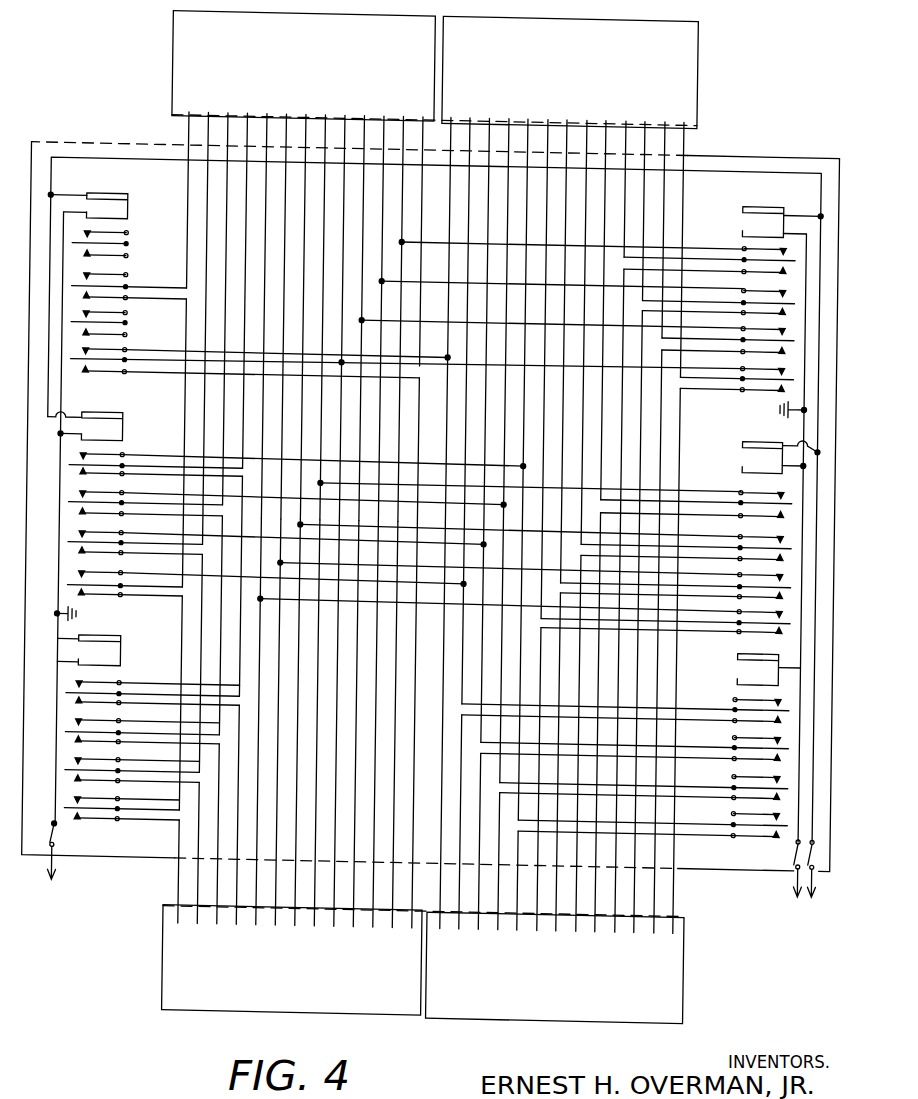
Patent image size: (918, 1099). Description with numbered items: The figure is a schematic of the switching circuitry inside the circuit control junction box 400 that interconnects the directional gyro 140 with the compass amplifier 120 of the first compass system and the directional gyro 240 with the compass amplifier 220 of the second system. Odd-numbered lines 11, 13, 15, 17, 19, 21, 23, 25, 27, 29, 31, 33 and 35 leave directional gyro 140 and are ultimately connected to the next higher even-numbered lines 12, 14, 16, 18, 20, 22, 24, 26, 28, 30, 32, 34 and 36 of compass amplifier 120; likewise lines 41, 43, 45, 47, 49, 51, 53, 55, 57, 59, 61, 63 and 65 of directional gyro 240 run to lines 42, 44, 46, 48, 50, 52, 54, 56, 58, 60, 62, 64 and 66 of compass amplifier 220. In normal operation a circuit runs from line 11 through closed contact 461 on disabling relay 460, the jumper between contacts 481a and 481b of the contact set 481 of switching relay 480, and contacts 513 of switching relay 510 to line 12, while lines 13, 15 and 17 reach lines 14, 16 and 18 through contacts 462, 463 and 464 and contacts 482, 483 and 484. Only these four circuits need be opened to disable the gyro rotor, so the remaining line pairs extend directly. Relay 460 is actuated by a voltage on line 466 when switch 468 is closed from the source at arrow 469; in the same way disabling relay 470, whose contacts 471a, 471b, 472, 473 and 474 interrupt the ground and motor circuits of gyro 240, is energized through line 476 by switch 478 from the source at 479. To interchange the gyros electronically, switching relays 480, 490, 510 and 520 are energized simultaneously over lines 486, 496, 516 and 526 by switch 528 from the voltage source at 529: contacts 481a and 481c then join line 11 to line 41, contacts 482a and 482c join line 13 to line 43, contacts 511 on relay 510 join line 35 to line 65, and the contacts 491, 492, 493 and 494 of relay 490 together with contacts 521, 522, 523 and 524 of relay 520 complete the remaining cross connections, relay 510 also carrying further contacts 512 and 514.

The compass amplifier 120 is at (316, 53).
The compass amplifier 220 is at (540, 55).
The directional gyro 140 is at (276, 985).
The directional gyro 240 is at (536, 987).
The circuit control junction box 400 is at (769, 135).
The line 12 is at (188, 193).
The line 14 is at (205, 321).
The line 16 is at (225, 302).
The line 18 is at (245, 283).
The line 20 is at (264, 308).
The line 22 is at (283, 309).
The line 24 is at (303, 309).
The line 26 is at (322, 310).
The line 28 is at (342, 310).
The line 30 is at (361, 311).
The line 32 is at (381, 311).
The line 34 is at (400, 311).
The line 36 is at (421, 234).
The line 66 is at (448, 312).
The line 42 is at (466, 404).
The line 44 is at (485, 423).
The line 46 is at (504, 444).
The line 48 is at (523, 462).
The line 50 is at (544, 361).
The line 52 is at (564, 344).
The line 54 is at (583, 325).
The line 56 is at (603, 303).
The line 58 is at (624, 182).
The line 60 is at (644, 203).
The line 62 is at (663, 223).
The line 64 is at (682, 242).
The line 11 is at (182, 621).
The line 13 is at (199, 748).
The line 15 is at (219, 730).
The line 17 is at (239, 710).
The line 19 is at (258, 731).
The line 21 is at (277, 732).
The line 23 is at (297, 732).
The line 25 is at (316, 733).
The line 27 is at (336, 733).
The line 29 is at (355, 734).
The line 31 is at (375, 734).
The line 33 is at (394, 734).
The line 35 is at (415, 663).
The line 65 is at (442, 735).
The line 41 is at (460, 832).
The line 43 is at (479, 851).
The line 45 is at (498, 871).
The line 47 is at (517, 890).
The line 49 is at (539, 788).
The line 51 is at (558, 772).
The line 53 is at (578, 753).
The line 55 is at (597, 732).
The line 57 is at (619, 610).
The line 59 is at (638, 631).
The line 61 is at (658, 651).
The line 63 is at (676, 670).
The switching relay 510 is at (130, 200).
The line 516 is at (78, 196).
The relay contacts 514 is at (131, 245).
The contacts 513 is at (131, 287).
The relay contacts 512 is at (131, 325).
The contacts 511 is at (126, 380).
The switching relay 480 is at (128, 426).
The line 486 is at (92, 412).
The contacts 484 is at (133, 485).
The contacts 483 is at (133, 525).
The contacts 482 is at (133, 565).
The contacts 481 is at (130, 605).
The contact 482a is at (88, 540).
The contact 482c is at (88, 556).
The contact 481c is at (88, 583).
The contact 481b is at (84, 598).
The contact 481a is at (88, 620).
The disabling relay 460 is at (129, 655).
The line 466 is at (65, 664).
The contact 464 is at (139, 689).
The contact 463 is at (139, 734).
The contact 462 is at (139, 772).
The contact 461 is at (139, 810).
The switch 468 is at (72, 835).
The line 469 is at (68, 878).
The switching relay 520 is at (746, 199).
The line 526 is at (804, 202).
The relay contacts 521 is at (741, 225).
The relay contacts 522 is at (734, 279).
The relay contacts 523 is at (734, 318).
The relay contacts 524 is at (734, 357).
The switching relay 490 is at (748, 440).
The line 496 is at (794, 432).
The relay contacts 494 is at (743, 470).
The relay contacts 493 is at (736, 524).
The relay contacts 492 is at (736, 563).
The relay contacts 491 is at (736, 600).
The disabling relay 470 is at (744, 668).
The line 476 is at (786, 672).
The relay contacts 471a is at (741, 688).
The relay contacts 471b is at (741, 726).
The relay contacts 472 is at (736, 769).
The relay contacts 473 is at (736, 806).
The relay contacts 474 is at (738, 832).
The switch 478 is at (805, 831).
The voltage source 479 is at (805, 878).
The switch 528 is at (818, 848).
The voltage source 529 is at (818, 890).